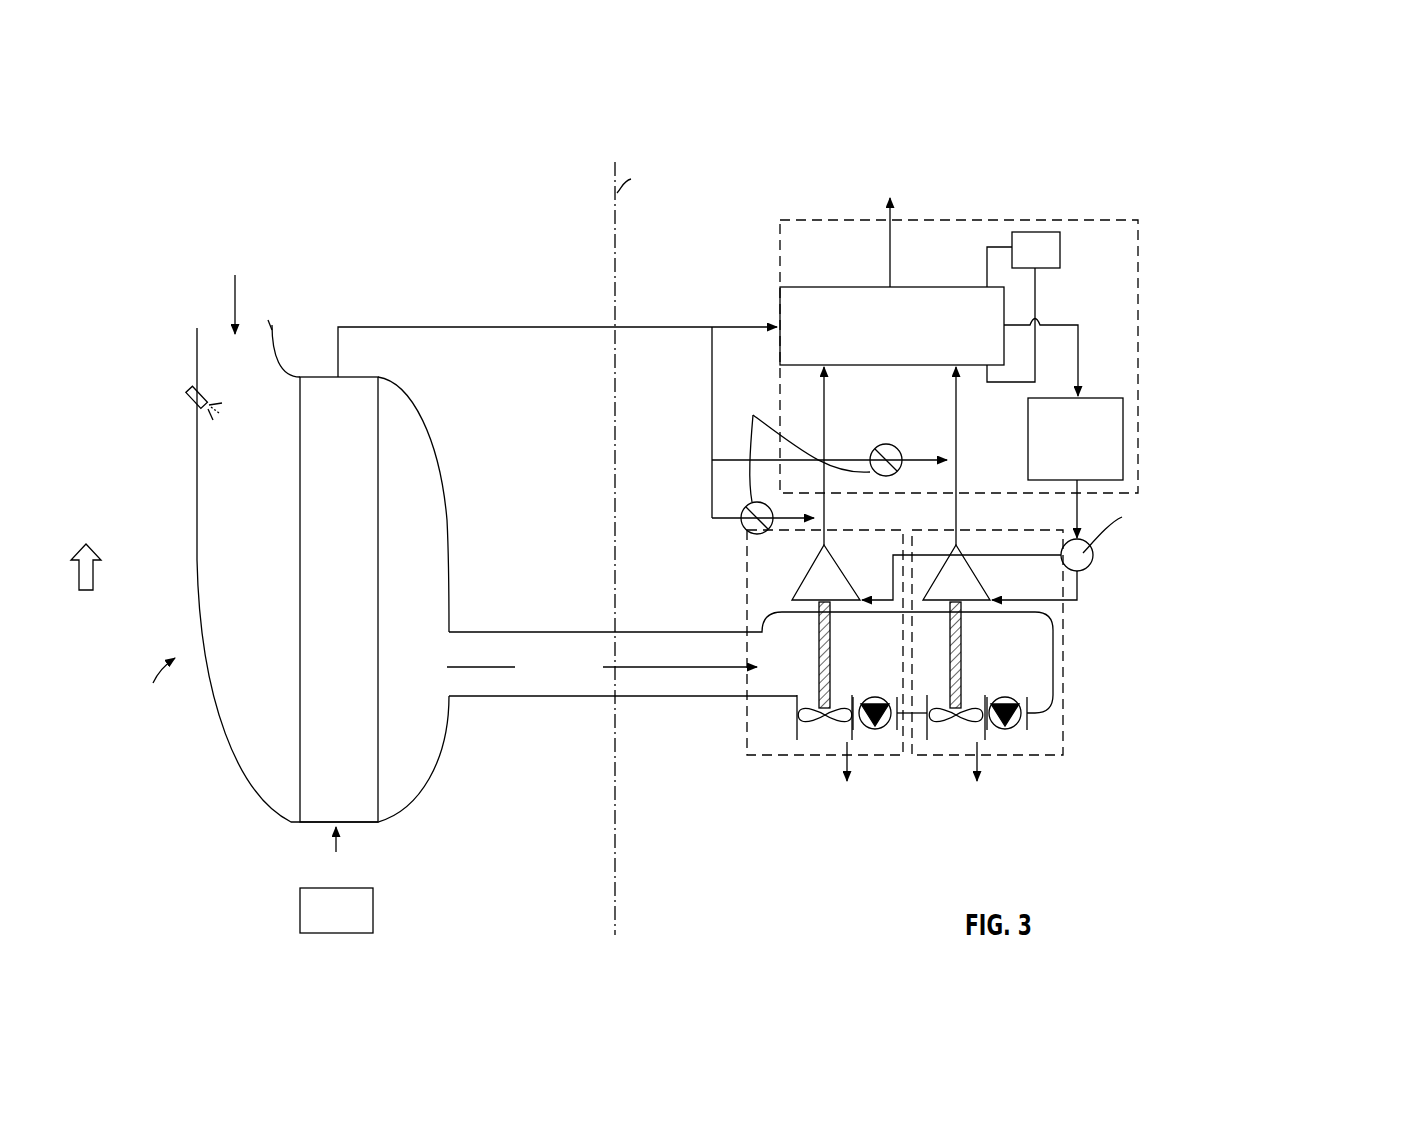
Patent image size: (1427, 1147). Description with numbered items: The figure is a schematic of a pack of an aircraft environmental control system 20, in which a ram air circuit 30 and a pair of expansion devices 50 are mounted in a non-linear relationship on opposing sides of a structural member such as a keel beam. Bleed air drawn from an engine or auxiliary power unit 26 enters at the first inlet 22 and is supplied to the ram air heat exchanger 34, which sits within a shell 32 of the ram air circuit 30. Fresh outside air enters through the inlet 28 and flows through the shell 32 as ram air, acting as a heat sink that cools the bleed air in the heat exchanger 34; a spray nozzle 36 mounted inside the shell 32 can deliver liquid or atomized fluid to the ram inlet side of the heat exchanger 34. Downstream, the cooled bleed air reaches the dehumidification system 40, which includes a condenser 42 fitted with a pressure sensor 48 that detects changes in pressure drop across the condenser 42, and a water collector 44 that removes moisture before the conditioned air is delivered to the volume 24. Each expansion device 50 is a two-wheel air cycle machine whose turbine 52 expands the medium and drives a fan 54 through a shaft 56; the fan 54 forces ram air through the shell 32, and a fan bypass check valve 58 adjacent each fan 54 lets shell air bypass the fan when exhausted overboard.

The environmental control system 20 is at (157, 177).
The first inlet 22 is at (315, 822).
The volume 24 is at (900, 158).
The engine or auxiliary power unit 26 is at (346, 921).
The inlet 28 is at (260, 322).
The RAM air circuit 30 is at (153, 683).
The shell 32 is at (218, 697).
The heat exchanger 34 is at (356, 395).
The spray nozzle 36 is at (137, 428).
The dehumidification system 40 is at (1125, 213).
The condenser 42 is at (815, 300).
The water collector 44 is at (1115, 413).
The pressure sensor 48 is at (1050, 232).
The expansion device 50 is at (743, 611).
The turbine 52 is at (803, 578).
The fan 54 is at (808, 722).
The shaft 56 is at (819, 667).
The fan bypass check valve 58 is at (878, 728).